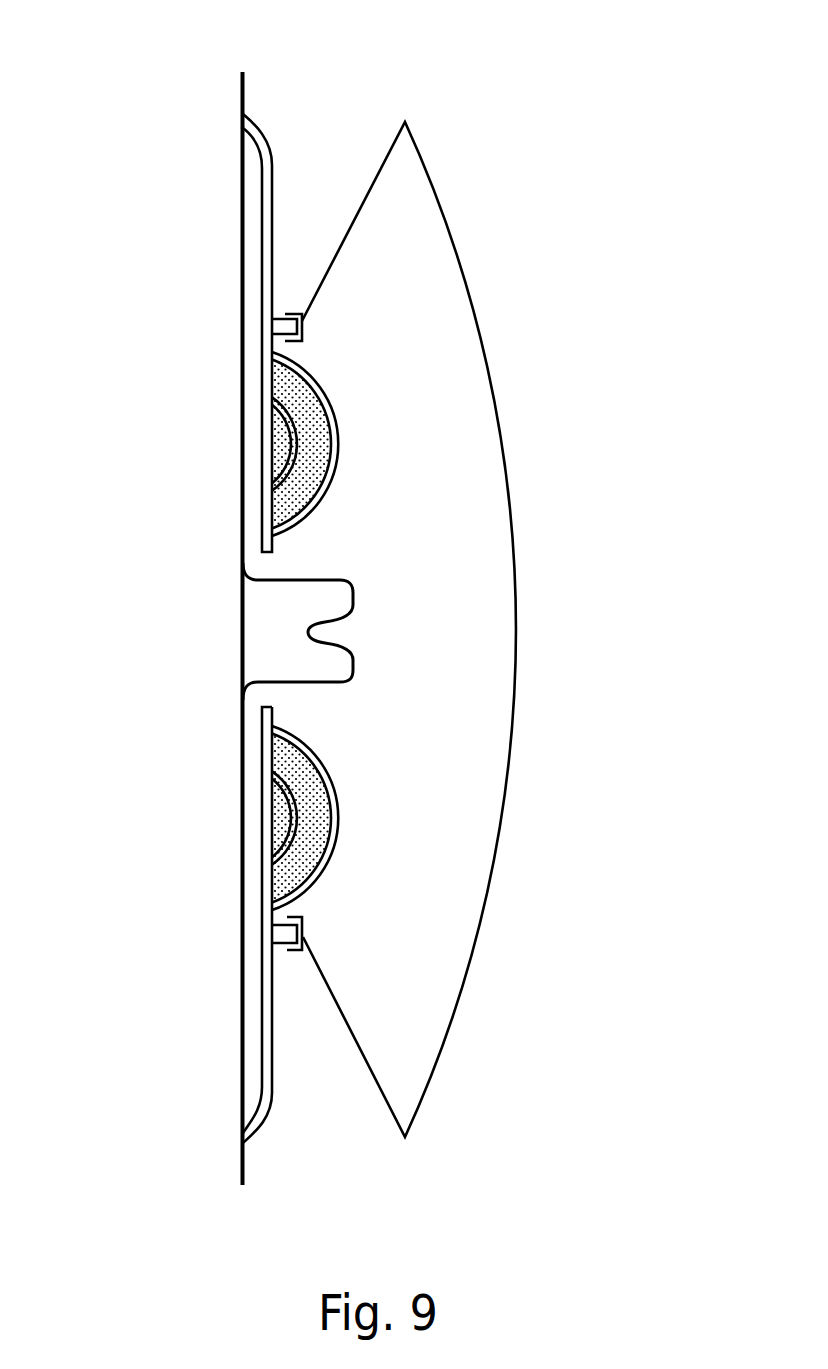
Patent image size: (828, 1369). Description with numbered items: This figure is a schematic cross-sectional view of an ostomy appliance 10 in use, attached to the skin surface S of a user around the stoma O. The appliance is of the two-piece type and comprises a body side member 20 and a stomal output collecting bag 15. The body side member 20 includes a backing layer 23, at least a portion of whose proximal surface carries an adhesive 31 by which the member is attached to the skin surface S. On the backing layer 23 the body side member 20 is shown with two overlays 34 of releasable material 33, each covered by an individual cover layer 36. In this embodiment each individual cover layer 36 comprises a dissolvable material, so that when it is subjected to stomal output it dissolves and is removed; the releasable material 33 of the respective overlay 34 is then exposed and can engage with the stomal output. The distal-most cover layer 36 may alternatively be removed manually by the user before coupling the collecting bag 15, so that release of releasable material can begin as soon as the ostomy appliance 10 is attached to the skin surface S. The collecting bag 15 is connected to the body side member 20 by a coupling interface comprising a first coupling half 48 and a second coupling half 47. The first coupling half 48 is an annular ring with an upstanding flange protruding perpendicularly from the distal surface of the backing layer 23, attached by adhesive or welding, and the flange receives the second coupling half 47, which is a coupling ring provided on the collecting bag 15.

The ostomy appliance 10 is at (368, 88).
The stomal output collecting bag 15 is at (514, 569).
The body side member 20 is at (274, 146).
The backing layer 23 is at (265, 1107).
The adhesive 31 is at (248, 978).
The releasable material 33 is at (280, 440).
The overlay 34 is at (313, 478).
The individual cover layer 36 is at (335, 436).
The second coupling half 47 is at (302, 918).
The first coupling half 48 is at (280, 935).
The stoma O is at (333, 660).
The skin surface S is at (243, 1172).